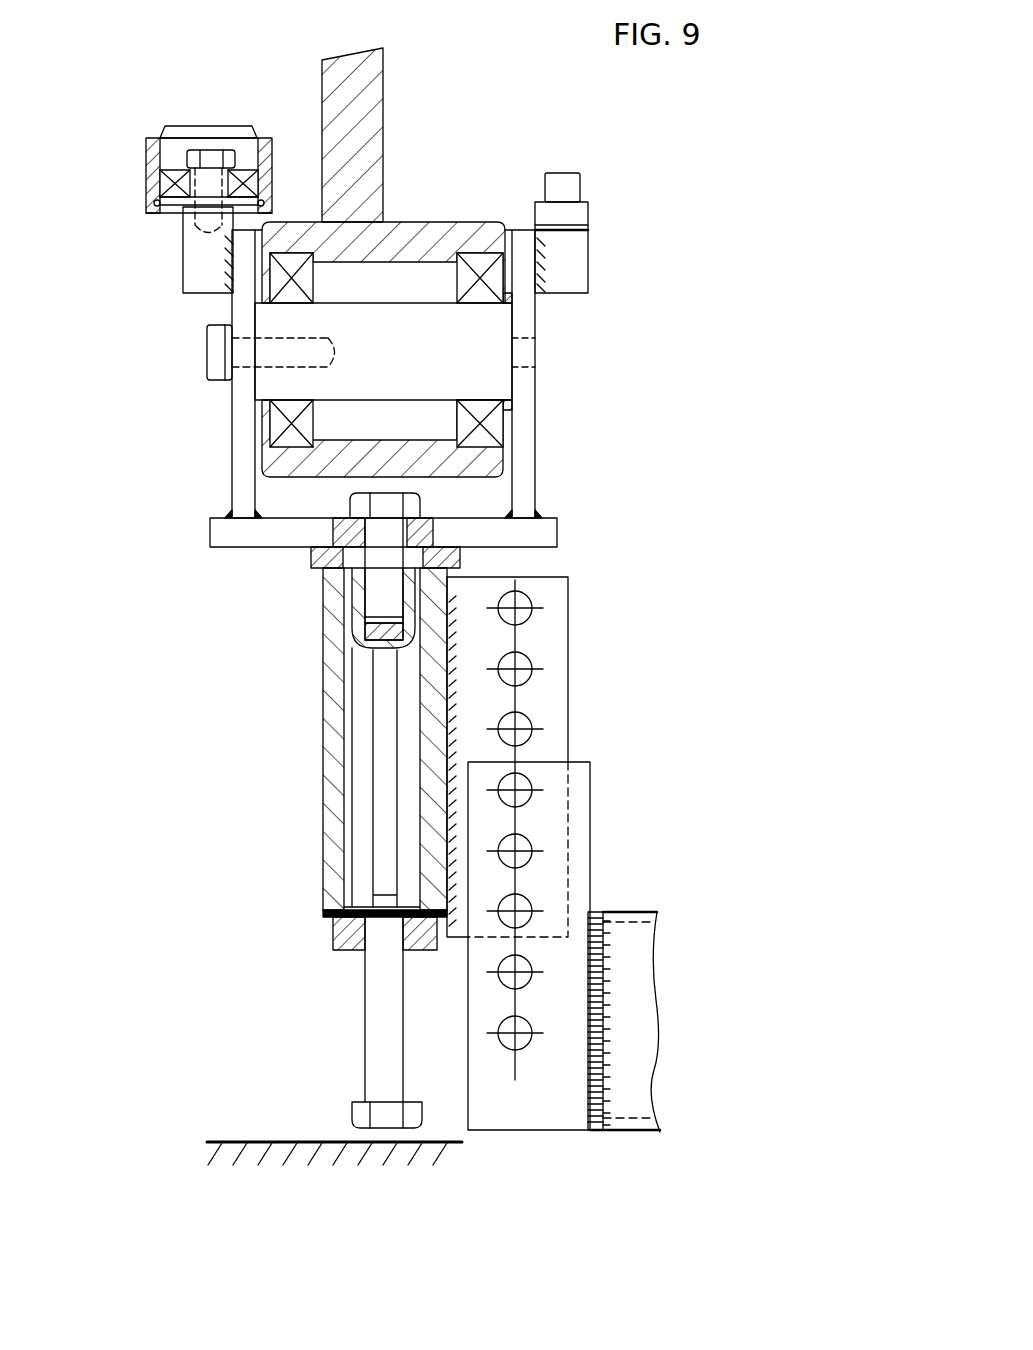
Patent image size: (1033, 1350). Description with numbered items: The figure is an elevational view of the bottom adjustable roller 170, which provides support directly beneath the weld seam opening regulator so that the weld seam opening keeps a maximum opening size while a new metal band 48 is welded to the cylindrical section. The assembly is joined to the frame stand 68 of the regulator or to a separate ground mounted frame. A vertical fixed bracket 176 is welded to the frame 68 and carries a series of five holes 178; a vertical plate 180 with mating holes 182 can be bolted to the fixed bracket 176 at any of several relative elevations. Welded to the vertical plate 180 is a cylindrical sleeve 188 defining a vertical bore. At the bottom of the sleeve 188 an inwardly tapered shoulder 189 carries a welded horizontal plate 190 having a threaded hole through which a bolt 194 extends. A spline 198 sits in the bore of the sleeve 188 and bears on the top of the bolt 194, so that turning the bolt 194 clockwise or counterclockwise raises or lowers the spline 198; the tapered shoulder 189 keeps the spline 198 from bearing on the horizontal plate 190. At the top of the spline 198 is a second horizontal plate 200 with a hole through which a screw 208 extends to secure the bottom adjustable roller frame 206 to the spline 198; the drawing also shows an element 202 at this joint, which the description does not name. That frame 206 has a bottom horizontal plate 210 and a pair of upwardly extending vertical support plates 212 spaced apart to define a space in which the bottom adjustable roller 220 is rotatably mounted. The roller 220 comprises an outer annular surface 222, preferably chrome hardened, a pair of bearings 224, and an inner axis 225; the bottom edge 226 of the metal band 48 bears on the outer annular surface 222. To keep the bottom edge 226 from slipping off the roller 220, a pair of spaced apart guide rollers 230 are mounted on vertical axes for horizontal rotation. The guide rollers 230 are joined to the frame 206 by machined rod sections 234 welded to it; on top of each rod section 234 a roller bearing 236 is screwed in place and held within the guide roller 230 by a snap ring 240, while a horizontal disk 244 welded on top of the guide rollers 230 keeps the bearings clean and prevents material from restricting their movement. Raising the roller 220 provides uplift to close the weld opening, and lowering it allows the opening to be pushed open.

The metal band 48 is at (367, 85).
The frame stand 68 is at (650, 1057).
The bottom adjustable roller 170 is at (600, 456).
The vertical fixed bracket 176 is at (528, 1132).
The holes 178 is at (533, 1018).
The vertical plate 180 is at (553, 690).
The mating holes 182 is at (530, 661).
The cylindrical sleeve 188 is at (330, 716).
The inwardly tapered shoulder 189 is at (350, 898).
The horizontal plate 190 is at (340, 952).
The bolt 194 is at (378, 1053).
The spline 198 is at (362, 818).
The second horizontal plate 200 is at (313, 565).
The bushing 202 is at (333, 535).
The bottom adjustable roller frame 206 is at (548, 498).
The screw 208 is at (350, 501).
The bottom horizontal plate 210 is at (545, 538).
The vertical support plates 212 is at (238, 409).
The bottom adjustable roller 220 is at (433, 228).
The outer annular surface 222 is at (470, 224).
The bearings 224 is at (270, 291).
The inner axis 225 is at (455, 318).
The bottom edge 226 is at (364, 224).
The guide rollers 230 is at (267, 137).
The machined rod sections 234 is at (190, 268).
The roller bearing 236 is at (160, 186).
The snap ring 240 is at (152, 204).
The horizontal disk 244 is at (170, 128).